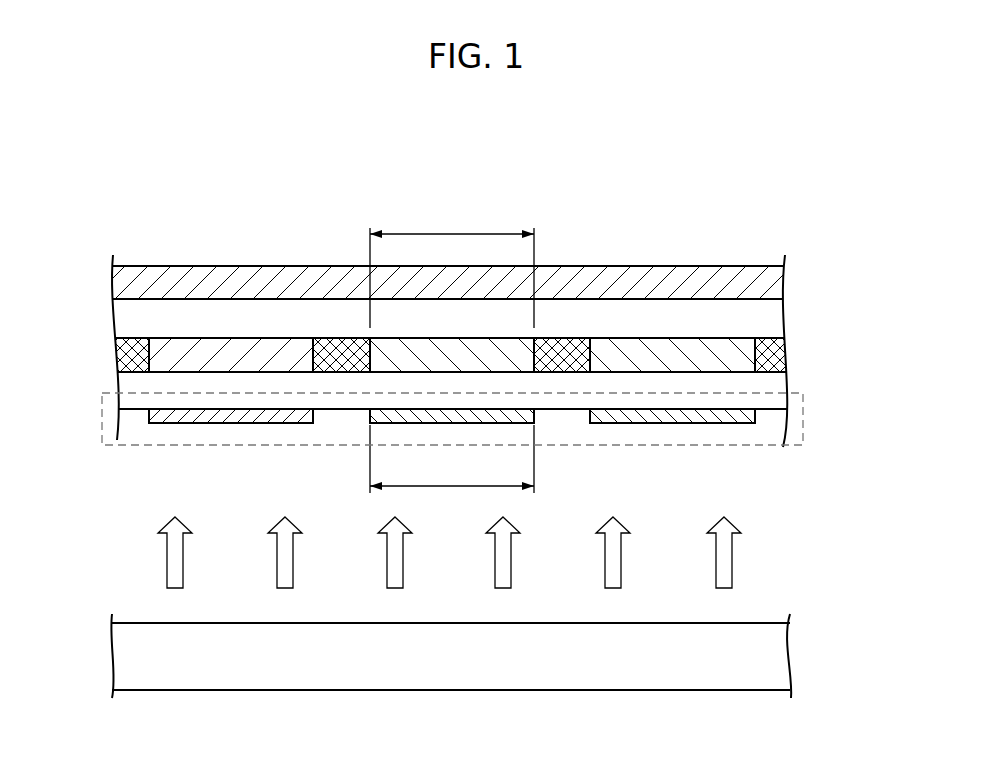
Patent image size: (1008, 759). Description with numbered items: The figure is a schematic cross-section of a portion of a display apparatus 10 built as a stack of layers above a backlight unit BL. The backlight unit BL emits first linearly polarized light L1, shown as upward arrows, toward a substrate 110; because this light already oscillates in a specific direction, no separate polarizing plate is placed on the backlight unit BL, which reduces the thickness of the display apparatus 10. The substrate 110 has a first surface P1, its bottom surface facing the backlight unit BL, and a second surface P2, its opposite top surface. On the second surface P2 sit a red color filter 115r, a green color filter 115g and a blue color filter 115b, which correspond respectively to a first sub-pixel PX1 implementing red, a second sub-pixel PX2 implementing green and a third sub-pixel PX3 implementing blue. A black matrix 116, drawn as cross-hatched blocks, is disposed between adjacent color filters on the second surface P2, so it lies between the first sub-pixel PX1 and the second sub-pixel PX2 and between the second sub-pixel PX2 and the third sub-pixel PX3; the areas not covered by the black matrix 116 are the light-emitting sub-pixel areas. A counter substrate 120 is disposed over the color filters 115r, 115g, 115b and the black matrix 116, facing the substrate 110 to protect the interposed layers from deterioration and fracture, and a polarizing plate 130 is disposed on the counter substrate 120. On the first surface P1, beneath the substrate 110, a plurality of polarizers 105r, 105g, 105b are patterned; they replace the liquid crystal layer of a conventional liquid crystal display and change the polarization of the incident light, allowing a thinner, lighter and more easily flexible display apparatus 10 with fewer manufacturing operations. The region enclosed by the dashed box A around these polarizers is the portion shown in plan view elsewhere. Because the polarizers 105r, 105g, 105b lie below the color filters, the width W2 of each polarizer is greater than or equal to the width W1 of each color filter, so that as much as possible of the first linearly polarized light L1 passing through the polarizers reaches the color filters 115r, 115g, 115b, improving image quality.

The display apparatus 10 is at (808, 190).
The polarizing plate 130 is at (772, 287).
The counter substrate 120 is at (772, 317).
The black matrix 116 is at (777, 355).
The substrate 110 is at (782, 383).
The red color filter 115r is at (233, 348).
The green color filter 115g is at (522, 355).
The blue color filter 115b is at (703, 347).
The polarizer 105r is at (230, 423).
The polarizer 105g is at (535, 415).
The polarizer 105b is at (680, 420).
The first sub-pixel PX1 is at (197, 256).
The second sub-pixel PX2 is at (408, 214).
The third sub-pixel PX3 is at (672, 253).
The first surface P1 is at (140, 410).
The second surface P2 is at (160, 371).
The width of color filter W1 is at (452, 268).
The width of polarizer W2 is at (452, 459).
The region A is at (763, 445).
The first linearly polarized light L1 is at (727, 563).
The backlight unit BL is at (787, 658).